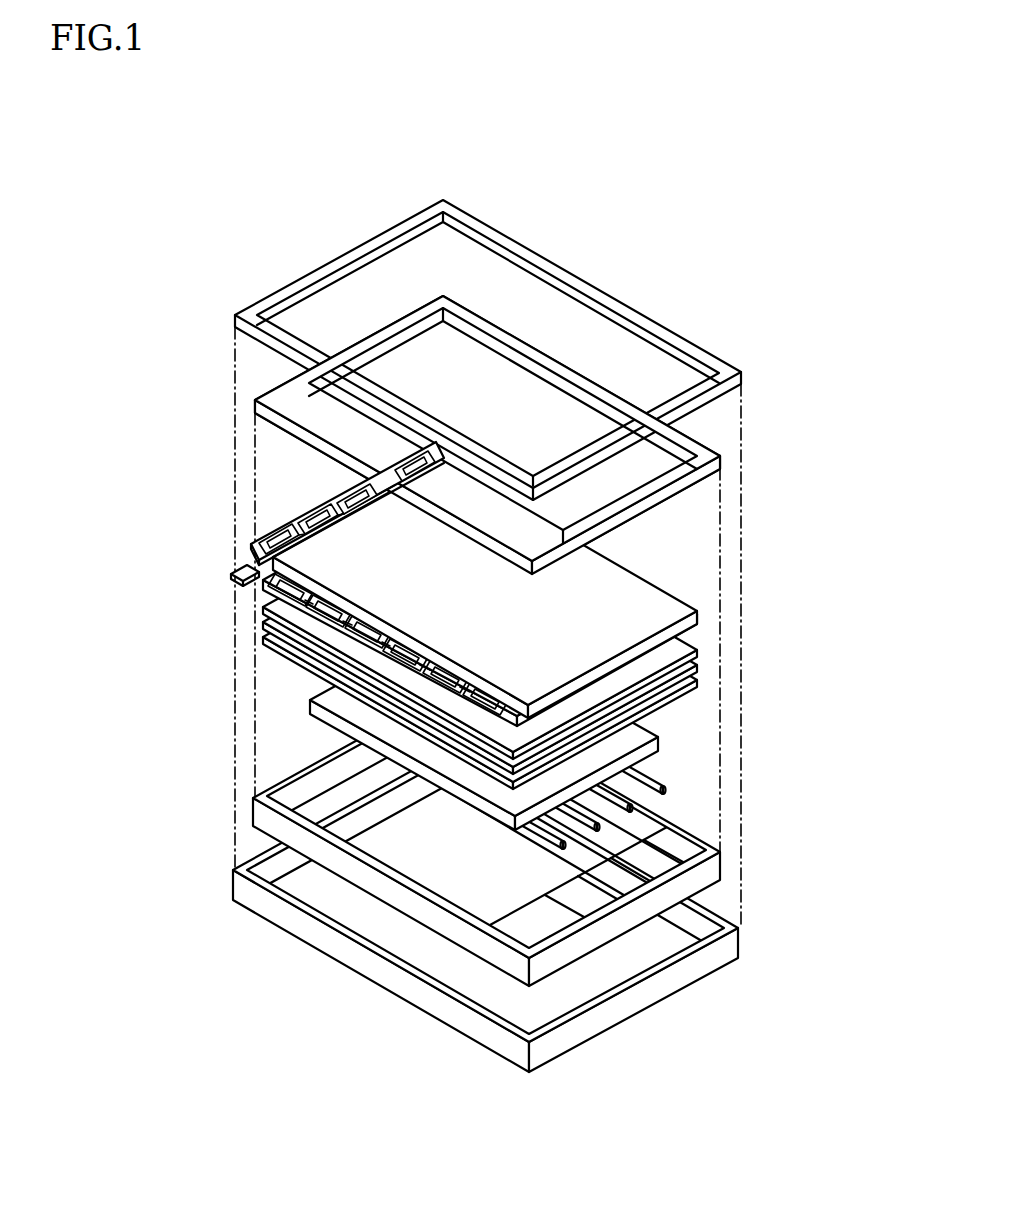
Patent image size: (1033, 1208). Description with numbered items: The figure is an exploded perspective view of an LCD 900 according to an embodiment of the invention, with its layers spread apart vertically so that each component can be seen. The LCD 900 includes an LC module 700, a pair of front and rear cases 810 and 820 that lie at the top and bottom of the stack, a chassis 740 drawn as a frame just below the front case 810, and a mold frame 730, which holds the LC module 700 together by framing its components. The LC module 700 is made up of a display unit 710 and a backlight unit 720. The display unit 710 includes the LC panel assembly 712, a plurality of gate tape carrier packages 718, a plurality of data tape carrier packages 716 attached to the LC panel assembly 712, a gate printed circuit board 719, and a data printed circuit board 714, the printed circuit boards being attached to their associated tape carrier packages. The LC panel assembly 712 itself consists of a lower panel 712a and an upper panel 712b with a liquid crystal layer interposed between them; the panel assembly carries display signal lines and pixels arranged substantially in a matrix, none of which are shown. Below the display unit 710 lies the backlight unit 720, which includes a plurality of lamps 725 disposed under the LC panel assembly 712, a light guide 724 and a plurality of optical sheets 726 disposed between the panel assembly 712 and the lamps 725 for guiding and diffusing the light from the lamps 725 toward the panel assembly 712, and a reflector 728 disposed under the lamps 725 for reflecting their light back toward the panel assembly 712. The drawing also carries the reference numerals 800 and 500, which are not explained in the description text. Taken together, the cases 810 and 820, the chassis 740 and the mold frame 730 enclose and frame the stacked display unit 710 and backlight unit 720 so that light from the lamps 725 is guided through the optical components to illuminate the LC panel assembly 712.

The LCD 900 is at (283, 259).
The chassis 800 is at (694, 254).
The front case 810 is at (521, 247).
The rear case 820 is at (630, 998).
The light shielding member 500 is at (733, 436).
The chassis 740 is at (680, 481).
The LC module 700 is at (137, 405).
The display unit 710 is at (654, 555).
The LC panel assembly 712 is at (664, 604).
The lower panel 712a is at (700, 630).
The upper panel 712b is at (700, 610).
The data PCB 714 is at (235, 576).
The data TCPs 716 is at (263, 597).
The gate TCPs 718 is at (295, 522).
The gate PCB 719 is at (326, 500).
The backlight unit 720 is at (829, 648).
The light guide 724 is at (673, 747).
The lamps 725 is at (665, 781).
The optical sheets 726 is at (739, 650).
The reflector 728 is at (720, 852).
The mold frame 730 is at (653, 907).